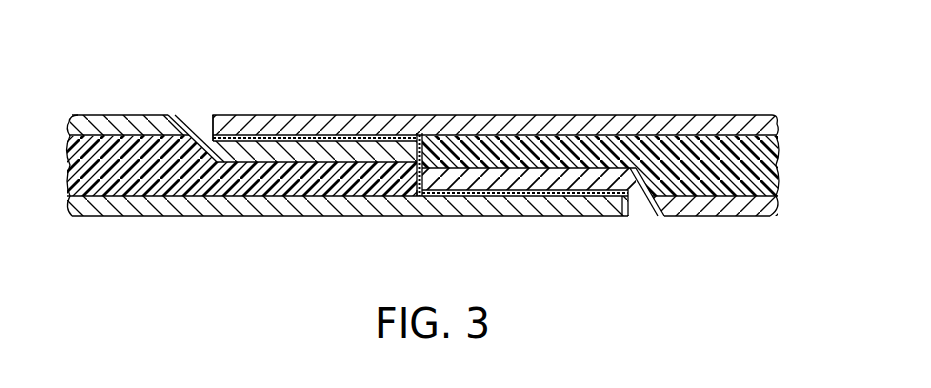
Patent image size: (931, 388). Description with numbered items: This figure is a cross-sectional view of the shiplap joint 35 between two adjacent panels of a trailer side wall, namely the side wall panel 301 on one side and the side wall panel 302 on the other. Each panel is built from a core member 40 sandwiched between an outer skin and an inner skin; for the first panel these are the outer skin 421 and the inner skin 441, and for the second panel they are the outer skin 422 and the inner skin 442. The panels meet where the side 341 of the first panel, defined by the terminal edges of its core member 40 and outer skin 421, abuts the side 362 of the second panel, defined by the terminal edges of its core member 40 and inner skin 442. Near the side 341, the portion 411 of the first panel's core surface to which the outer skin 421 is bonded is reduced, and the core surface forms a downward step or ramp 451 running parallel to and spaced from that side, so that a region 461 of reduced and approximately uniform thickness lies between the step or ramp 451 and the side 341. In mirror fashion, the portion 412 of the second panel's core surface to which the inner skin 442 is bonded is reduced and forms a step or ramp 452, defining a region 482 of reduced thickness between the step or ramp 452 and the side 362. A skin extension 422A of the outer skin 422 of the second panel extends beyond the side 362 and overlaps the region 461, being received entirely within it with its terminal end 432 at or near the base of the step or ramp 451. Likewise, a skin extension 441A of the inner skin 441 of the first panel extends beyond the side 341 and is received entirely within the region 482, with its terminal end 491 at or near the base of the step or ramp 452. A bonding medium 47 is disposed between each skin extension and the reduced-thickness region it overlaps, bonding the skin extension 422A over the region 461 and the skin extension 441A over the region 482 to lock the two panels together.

The side wall panel 301 is at (95, 106).
The side wall panel 302 is at (734, 94).
The joint 35 is at (432, 94).
The core member 40 is at (65, 160).
The outer skin 421 is at (124, 115).
The outer skin 422 is at (680, 113).
The skin extension 422A is at (292, 113).
The inner skin 441 is at (97, 218).
The skin extension 441A is at (577, 217).
The inner skin 442 is at (745, 217).
The portion of core member surface 411 is at (326, 158).
The portion of core member surface 412 is at (584, 163).
The step or ramp 451 is at (197, 132).
The step or ramp 452 is at (648, 200).
The terminal end 432 is at (210, 134).
The region of reduced thickness 461 is at (268, 168).
The bonding medium 47 is at (371, 134).
The region of reduced thickness 482 is at (497, 192).
The terminal end 491 is at (630, 213).
The side 341 is at (419, 198).
The side 362 is at (398, 117).